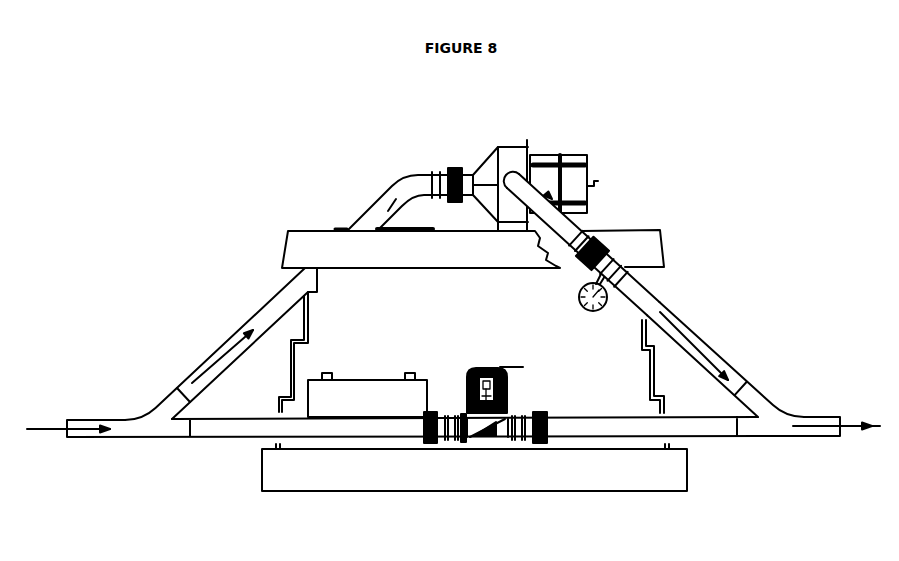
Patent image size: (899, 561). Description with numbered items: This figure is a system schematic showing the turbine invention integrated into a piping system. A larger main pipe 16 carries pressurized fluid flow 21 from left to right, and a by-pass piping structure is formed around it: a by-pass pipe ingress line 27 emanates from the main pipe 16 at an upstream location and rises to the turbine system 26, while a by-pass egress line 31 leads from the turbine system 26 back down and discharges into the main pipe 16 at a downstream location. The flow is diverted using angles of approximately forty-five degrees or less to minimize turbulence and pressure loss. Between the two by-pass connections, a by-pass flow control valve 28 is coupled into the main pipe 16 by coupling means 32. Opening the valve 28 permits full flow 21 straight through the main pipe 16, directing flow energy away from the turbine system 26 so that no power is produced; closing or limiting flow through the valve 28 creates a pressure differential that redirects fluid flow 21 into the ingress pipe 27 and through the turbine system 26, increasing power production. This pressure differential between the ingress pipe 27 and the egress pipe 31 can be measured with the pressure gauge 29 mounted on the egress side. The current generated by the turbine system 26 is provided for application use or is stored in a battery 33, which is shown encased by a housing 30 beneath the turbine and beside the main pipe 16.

The main pipe 16 is at (190, 438).
The flow 21 is at (444, 372).
The turbine system 26 is at (537, 157).
The by-pass pipe ingress line 27 is at (265, 304).
The by-pass flow control valve 28 is at (497, 393).
The pressure gauge 29 is at (633, 272).
The housing 30 is at (658, 383).
The by-pass egress line 31 is at (663, 305).
The coupling means 32 is at (530, 413).
The battery 33 is at (335, 391).